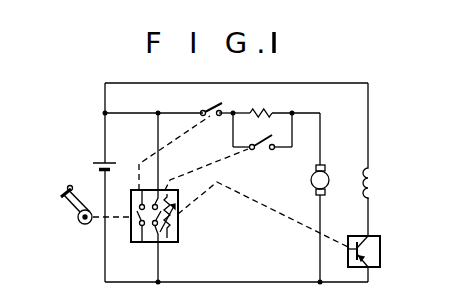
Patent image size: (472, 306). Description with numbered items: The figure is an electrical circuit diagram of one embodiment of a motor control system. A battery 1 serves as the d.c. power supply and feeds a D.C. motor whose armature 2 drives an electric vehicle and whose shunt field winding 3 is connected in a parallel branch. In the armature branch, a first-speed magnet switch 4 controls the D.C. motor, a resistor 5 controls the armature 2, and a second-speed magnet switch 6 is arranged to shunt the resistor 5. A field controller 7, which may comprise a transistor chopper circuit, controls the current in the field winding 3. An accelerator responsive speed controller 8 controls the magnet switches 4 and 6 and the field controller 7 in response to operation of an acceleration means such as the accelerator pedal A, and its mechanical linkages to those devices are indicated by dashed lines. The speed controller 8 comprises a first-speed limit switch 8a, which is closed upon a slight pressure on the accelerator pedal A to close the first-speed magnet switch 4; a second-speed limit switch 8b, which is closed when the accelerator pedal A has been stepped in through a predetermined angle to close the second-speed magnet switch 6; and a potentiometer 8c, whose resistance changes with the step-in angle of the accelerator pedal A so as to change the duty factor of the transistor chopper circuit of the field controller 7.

The battery 1 is at (94, 158).
The armature 2 is at (325, 169).
The shunt field winding 3 is at (372, 177).
The first-speed magnet switch 4 is at (206, 110).
The resistor 5 is at (263, 112).
The second-speed magnet switch 6 is at (271, 150).
The field controller 7 is at (381, 247).
The accelerator responsive speed controller 8 is at (132, 201).
The first-speed limit switch 8a is at (134, 238).
The second-speed limit switch 8b is at (161, 240).
The potentiometer 8c is at (178, 222).
The accelerator pedal A is at (63, 191).